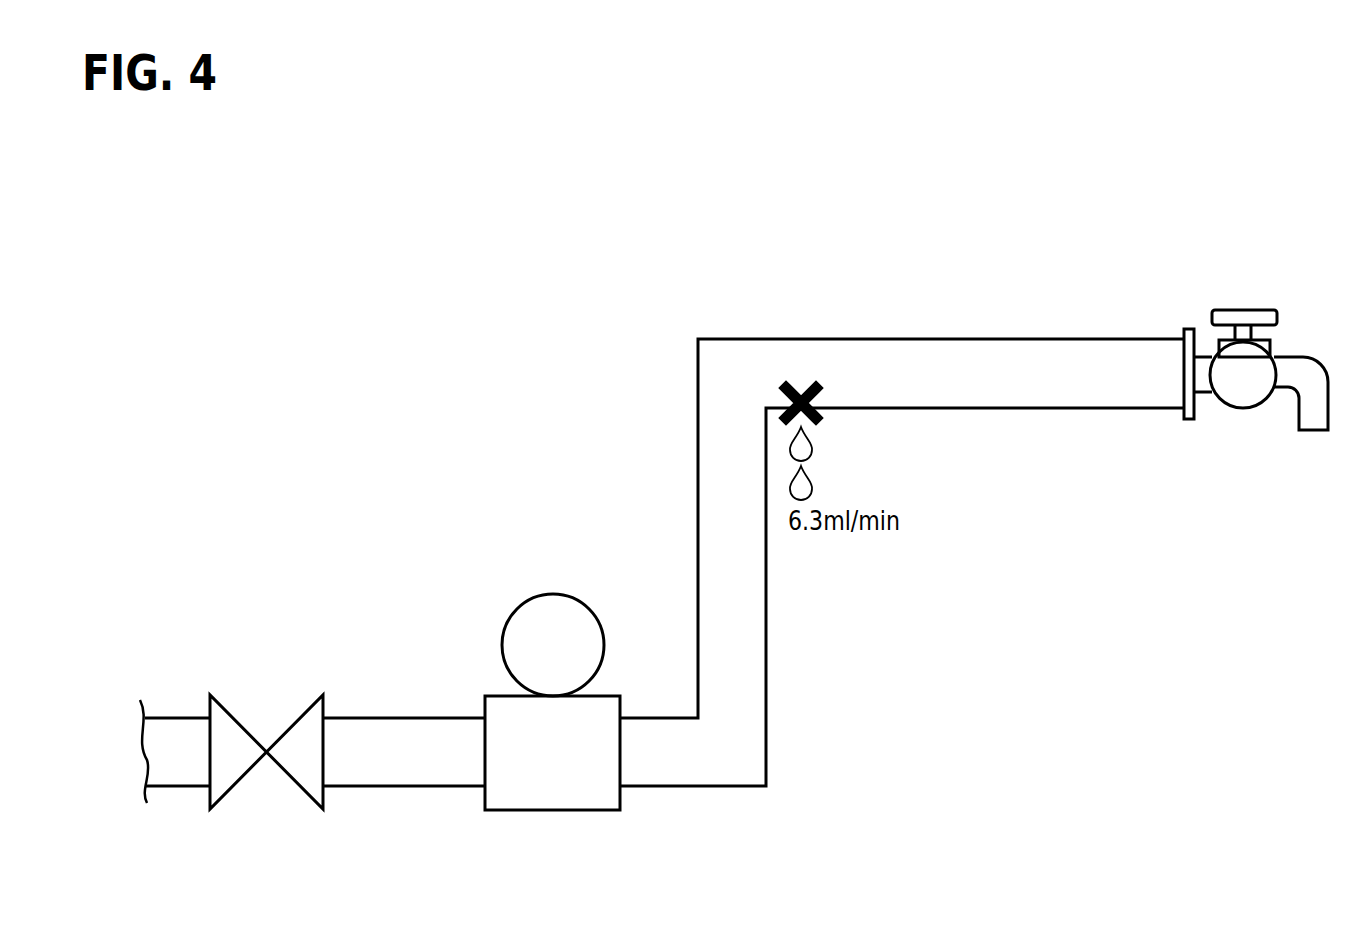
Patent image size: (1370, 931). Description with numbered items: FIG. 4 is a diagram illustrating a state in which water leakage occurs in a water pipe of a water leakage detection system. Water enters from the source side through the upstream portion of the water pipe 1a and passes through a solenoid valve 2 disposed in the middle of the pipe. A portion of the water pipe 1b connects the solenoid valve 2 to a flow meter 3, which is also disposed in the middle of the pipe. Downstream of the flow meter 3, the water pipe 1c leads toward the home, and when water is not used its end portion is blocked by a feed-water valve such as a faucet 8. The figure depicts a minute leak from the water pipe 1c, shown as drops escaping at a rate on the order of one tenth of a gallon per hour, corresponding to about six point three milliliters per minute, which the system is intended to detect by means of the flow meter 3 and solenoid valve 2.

The water pipe upstream portion 1a is at (173, 716).
The water pipe intermediate portion 1b is at (394, 716).
The water pipe downstream portion 1c is at (768, 750).
The solenoid valve 2 is at (266, 794).
The flow meter 3 is at (552, 812).
The faucet 8 is at (1290, 345).